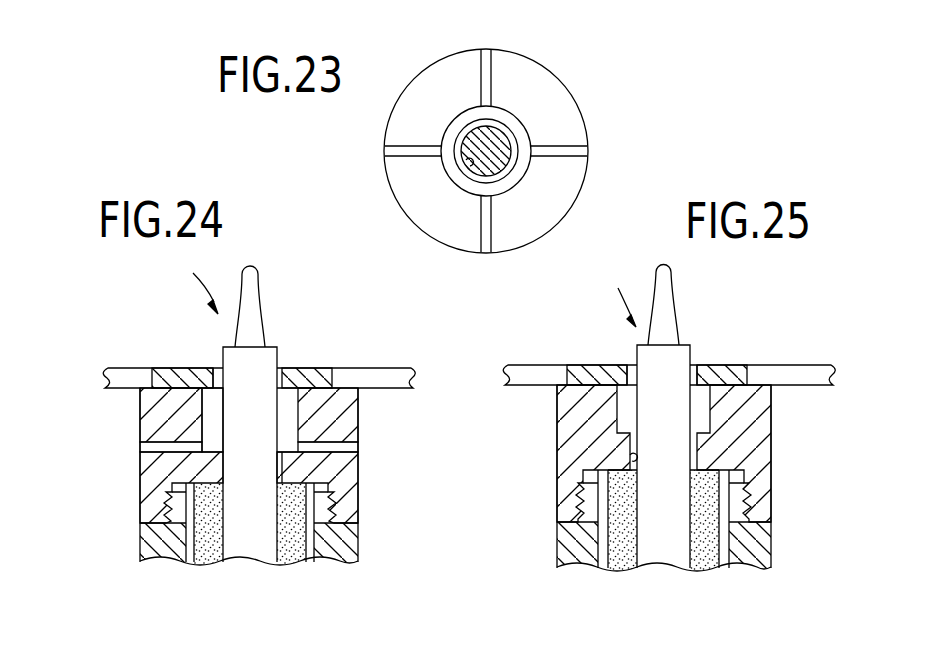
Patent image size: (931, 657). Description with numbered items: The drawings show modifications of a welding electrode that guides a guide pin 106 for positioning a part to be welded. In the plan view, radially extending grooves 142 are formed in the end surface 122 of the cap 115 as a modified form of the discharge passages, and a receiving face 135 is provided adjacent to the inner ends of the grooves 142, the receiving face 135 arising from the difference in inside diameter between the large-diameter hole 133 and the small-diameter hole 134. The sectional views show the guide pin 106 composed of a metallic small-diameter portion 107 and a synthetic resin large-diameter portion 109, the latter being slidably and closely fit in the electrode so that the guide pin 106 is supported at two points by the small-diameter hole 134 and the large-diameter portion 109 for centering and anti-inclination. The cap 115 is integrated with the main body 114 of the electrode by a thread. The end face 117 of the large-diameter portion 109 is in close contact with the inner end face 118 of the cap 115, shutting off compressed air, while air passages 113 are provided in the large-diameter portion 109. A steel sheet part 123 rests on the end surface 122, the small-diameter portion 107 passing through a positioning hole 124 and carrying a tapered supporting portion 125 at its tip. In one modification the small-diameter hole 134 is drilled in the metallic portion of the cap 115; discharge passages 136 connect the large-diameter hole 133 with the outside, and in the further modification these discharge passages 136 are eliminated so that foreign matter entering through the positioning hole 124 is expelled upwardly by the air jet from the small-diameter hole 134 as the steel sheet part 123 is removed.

In FIG. 24, the guide pin 106 is at (190, 281).
In FIG. 25, the guide pin 106 is at (614, 292).
In FIG. 23, the small-diameter portion 107 is at (498, 166).
In FIG. 24, the small-diameter portion 107 is at (281, 393).
In FIG. 25, the small-diameter portion 107 is at (633, 357).
In FIG. 24, the large-diameter portion 109 is at (208, 545).
In FIG. 25, the large-diameter portion 109 is at (621, 557).
In FIG. 24, the air passages 113 is at (313, 538).
In FIG. 25, the air passages 113 is at (724, 547).
In FIG. 24, the main body 114 is at (142, 548).
In FIG. 25, the main body 114 is at (557, 562).
In FIG. 24, the cap 115 is at (140, 423).
In FIG. 25, the cap 115 is at (557, 414).
In FIG. 24, the end face 117 is at (318, 478).
In FIG. 25, the end face 117 is at (738, 464).
In FIG. 24, the inner end face 118 is at (187, 507).
In FIG. 25, the inner end face 118 is at (581, 488).
In FIG. 23, the end surface 122 is at (567, 100).
In FIG. 24, the end surface 122 is at (333, 378).
In FIG. 25, the end surface 122 is at (752, 383).
In FIG. 24, the steel sheet part 123 is at (381, 378).
In FIG. 25, the steel sheet part 123 is at (813, 369).
In FIG. 24, the positioning hole 124 is at (220, 370).
In FIG. 25, the positioning hole 124 is at (699, 357).
In FIG. 24, the supporting portion 125 is at (252, 280).
In FIG. 25, the supporting portion 125 is at (673, 282).
In FIG. 23, the large-diameter hole 133 is at (464, 121).
In FIG. 24, the large-diameter hole 133 is at (358, 414).
In FIG. 25, the large-diameter hole 133 is at (704, 398).
In FIG. 23, the small-diameter hole 134 is at (470, 170).
In FIG. 25, the small-diameter hole 134 is at (633, 462).
In FIG. 23, the receiving face 135 is at (513, 122).
In FIG. 24, the receiving face 135 is at (211, 453).
In FIG. 25, the receiving face 135 is at (715, 419).
In FIG. 24, the discharge passages 136 is at (144, 447).
In FIG. 23, the grooves 142 is at (489, 65).